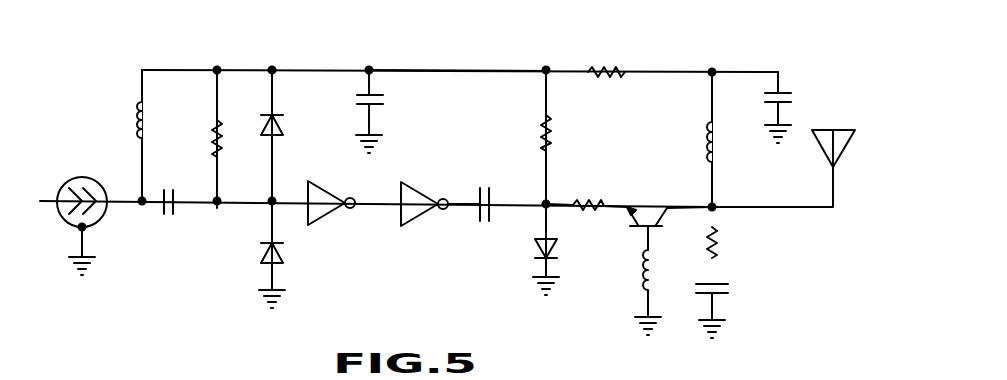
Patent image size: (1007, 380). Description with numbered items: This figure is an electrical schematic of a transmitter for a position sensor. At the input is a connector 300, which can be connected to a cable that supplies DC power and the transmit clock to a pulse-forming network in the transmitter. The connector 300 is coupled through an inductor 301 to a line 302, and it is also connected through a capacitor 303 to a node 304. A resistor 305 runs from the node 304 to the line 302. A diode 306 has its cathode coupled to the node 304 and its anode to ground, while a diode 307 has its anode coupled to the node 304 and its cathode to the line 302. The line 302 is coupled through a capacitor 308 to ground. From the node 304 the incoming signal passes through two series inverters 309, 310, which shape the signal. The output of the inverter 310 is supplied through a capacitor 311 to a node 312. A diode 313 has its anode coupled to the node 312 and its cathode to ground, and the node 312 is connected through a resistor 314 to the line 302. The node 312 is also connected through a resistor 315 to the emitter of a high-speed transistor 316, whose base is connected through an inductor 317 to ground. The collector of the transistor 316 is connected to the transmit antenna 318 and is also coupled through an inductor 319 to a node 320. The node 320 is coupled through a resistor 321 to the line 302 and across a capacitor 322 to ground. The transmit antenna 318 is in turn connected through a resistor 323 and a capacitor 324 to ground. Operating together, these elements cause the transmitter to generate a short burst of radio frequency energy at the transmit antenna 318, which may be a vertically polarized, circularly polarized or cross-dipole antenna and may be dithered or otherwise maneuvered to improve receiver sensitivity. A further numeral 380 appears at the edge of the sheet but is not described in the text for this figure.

The connector 300 is at (90, 176).
The inductor 301 is at (135, 108).
The line 302 is at (406, 68).
The capacitor 303 is at (160, 208).
The node 304 is at (216, 210).
The resistor 305 is at (214, 136).
The diode 306 is at (258, 257).
The diode 307 is at (280, 105).
The capacitor 308 is at (384, 100).
The inverter 309 is at (326, 216).
The inverter 310 is at (422, 216).
The capacitor 311 is at (470, 190).
The node 312 is at (542, 200).
The diode 313 is at (536, 254).
The resistor 314 is at (552, 136).
The resistor 315 is at (592, 202).
The high-speed transistor 316 is at (640, 226).
The inductor 317 is at (640, 270).
The transmit antenna 318 is at (796, 204).
The inductor 319 is at (706, 145).
The node 320 is at (713, 68).
The resistor 321 is at (605, 70).
The capacitor 322 is at (792, 102).
The resistor 323 is at (722, 244).
The capacitor 324 is at (728, 290).
The component 380 is at (658, 372).